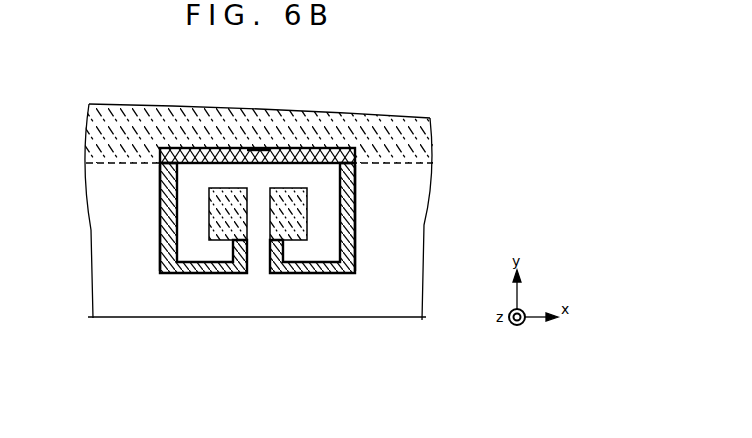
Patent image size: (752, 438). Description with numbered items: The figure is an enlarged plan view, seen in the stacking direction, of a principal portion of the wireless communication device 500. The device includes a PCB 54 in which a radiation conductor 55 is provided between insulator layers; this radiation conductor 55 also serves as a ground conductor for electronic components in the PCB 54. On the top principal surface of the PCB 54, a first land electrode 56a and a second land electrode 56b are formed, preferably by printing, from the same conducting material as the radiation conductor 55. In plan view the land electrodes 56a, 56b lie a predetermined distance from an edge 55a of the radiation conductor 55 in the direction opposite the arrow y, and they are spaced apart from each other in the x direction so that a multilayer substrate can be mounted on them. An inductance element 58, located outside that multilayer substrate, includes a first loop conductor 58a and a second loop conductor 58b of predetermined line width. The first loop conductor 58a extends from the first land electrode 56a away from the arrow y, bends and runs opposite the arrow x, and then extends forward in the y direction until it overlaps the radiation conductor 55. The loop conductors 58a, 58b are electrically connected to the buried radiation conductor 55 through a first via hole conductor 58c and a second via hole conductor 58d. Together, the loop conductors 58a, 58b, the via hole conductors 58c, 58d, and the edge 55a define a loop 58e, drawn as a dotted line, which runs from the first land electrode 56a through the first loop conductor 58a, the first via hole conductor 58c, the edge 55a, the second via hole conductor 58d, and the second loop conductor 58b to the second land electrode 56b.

The wireless communication device 500 is at (83, 77).
The PCB 54 is at (424, 290).
The radiation conductor 55 is at (432, 137).
The edge of the radiation conductor 55a is at (400, 168).
The first land electrode 56a is at (226, 188).
The second land electrode 56b is at (287, 188).
The inductance element 58 is at (398, 388).
The first loop conductor 58a is at (198, 274).
The second loop conductor 58b is at (313, 274).
The first via hole conductor 58c is at (163, 164).
The second via hole conductor 58d is at (333, 164).
The loop 58e is at (275, 163).